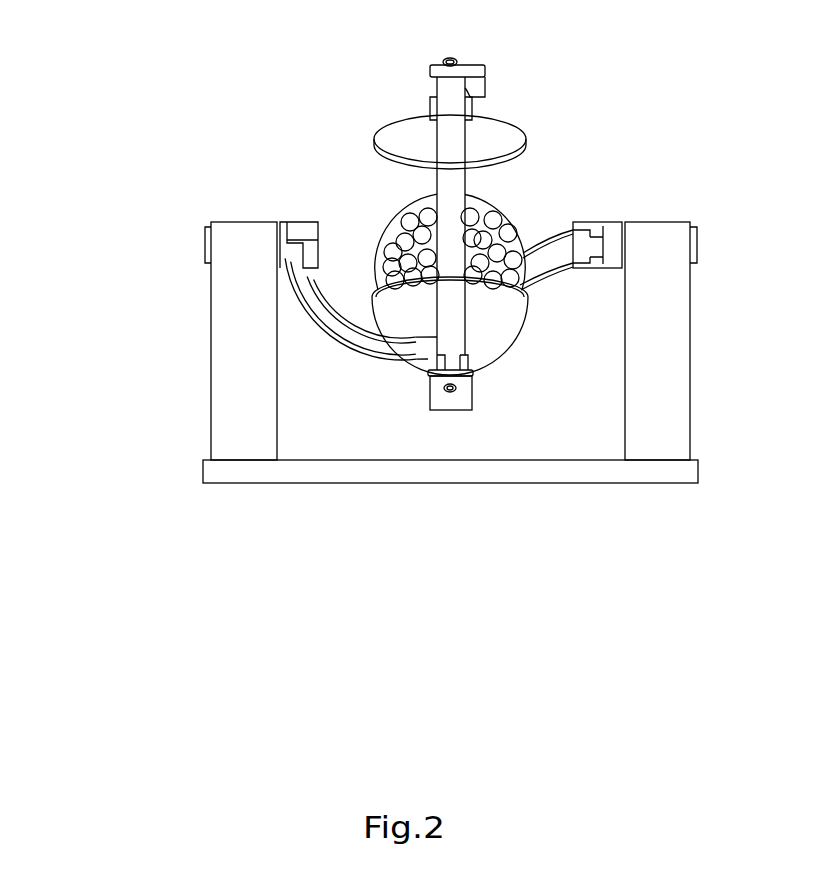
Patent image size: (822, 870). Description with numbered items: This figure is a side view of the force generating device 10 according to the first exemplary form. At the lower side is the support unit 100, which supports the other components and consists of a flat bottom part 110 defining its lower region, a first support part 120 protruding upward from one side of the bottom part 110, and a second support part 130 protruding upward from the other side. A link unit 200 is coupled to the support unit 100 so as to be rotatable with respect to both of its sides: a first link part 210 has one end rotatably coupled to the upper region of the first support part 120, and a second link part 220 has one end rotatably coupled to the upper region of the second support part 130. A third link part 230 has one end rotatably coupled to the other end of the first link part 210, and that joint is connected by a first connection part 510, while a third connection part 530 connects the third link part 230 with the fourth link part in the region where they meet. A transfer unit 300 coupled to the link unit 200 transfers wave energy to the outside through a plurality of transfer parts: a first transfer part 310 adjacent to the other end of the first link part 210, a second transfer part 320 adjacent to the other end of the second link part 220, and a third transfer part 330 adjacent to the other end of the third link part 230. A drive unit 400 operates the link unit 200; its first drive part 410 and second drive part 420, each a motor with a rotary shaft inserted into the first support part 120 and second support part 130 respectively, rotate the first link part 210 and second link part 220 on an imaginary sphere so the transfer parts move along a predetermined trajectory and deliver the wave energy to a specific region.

The force generating device 10 is at (224, 41).
The support unit 100 is at (62, 118).
The bottom part 110 is at (450, 472).
The first support part 120 is at (228, 393).
The second support part 130 is at (675, 395).
The link unit 200 is at (62, 214).
The first link part 210 is at (388, 357).
The second link part 220 is at (560, 273).
The third link part 230 is at (466, 345).
The transfer unit 300 is at (62, 311).
The first transfer part 310 is at (517, 338).
The second transfer part 320 is at (507, 203).
The third transfer part 330 is at (503, 133).
The drive unit 400 is at (62, 412).
The first drive part 410 is at (205, 243).
The second drive part 420 is at (697, 243).
The first connection part 510 is at (463, 400).
The third connection part 530 is at (473, 65).